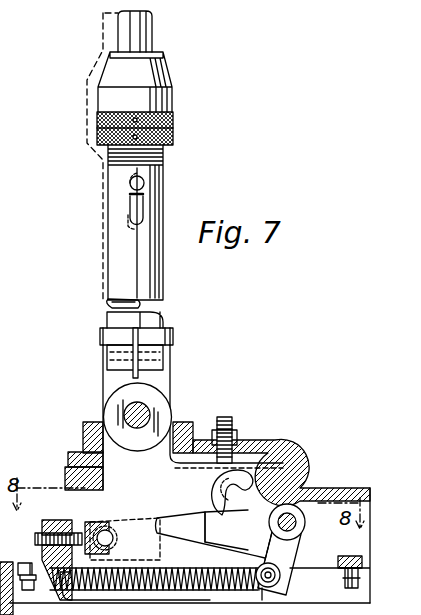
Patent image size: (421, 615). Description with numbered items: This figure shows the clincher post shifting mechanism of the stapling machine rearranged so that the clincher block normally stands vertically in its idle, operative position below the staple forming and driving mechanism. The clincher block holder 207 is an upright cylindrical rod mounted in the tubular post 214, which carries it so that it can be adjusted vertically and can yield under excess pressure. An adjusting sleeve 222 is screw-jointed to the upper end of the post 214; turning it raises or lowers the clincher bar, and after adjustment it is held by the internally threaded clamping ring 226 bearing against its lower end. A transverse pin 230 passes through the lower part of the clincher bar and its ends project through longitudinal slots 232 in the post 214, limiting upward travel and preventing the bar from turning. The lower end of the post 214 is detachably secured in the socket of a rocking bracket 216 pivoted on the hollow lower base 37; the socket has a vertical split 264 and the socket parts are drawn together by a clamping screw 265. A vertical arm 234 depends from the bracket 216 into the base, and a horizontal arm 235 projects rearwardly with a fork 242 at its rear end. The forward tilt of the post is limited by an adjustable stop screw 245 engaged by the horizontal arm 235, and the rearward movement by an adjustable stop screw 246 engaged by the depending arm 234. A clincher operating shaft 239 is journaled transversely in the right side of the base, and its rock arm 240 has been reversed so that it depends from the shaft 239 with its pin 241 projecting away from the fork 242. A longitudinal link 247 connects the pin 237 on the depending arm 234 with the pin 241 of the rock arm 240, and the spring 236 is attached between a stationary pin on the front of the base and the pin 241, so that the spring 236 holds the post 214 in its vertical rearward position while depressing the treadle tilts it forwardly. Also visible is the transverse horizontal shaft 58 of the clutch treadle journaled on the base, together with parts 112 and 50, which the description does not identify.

The clincher block holder 207 is at (152, 32).
The adjusting sleeve 222 is at (172, 88).
The clamping ring 226 is at (173, 137).
The pin 230 is at (133, 184).
The longitudinal slots 232 is at (130, 216).
The post 214 is at (165, 306).
The vertical split 264 is at (100, 335).
The clamping screw 265 is at (107, 351).
The rocking bracket 216 is at (108, 416).
The adjustable stop screw 245 is at (233, 437).
The horizontal arm 235 is at (213, 492).
The vertical arm 234 is at (158, 525).
The fork 242 is at (227, 531).
The pin 237 is at (110, 530).
The adjustable stop screw 246 is at (35, 532).
The longitudinal link 247 is at (154, 567).
The rock arm 240 is at (277, 547).
The clincher operating shaft 239 is at (303, 536).
The lower base 37 is at (338, 492).
The screw 112 is at (352, 588).
The pin 241 is at (270, 592).
The spring 236 is at (138, 590).
The horizontal shaft 58 is at (200, 592).
The base plate 50 is at (30, 590).